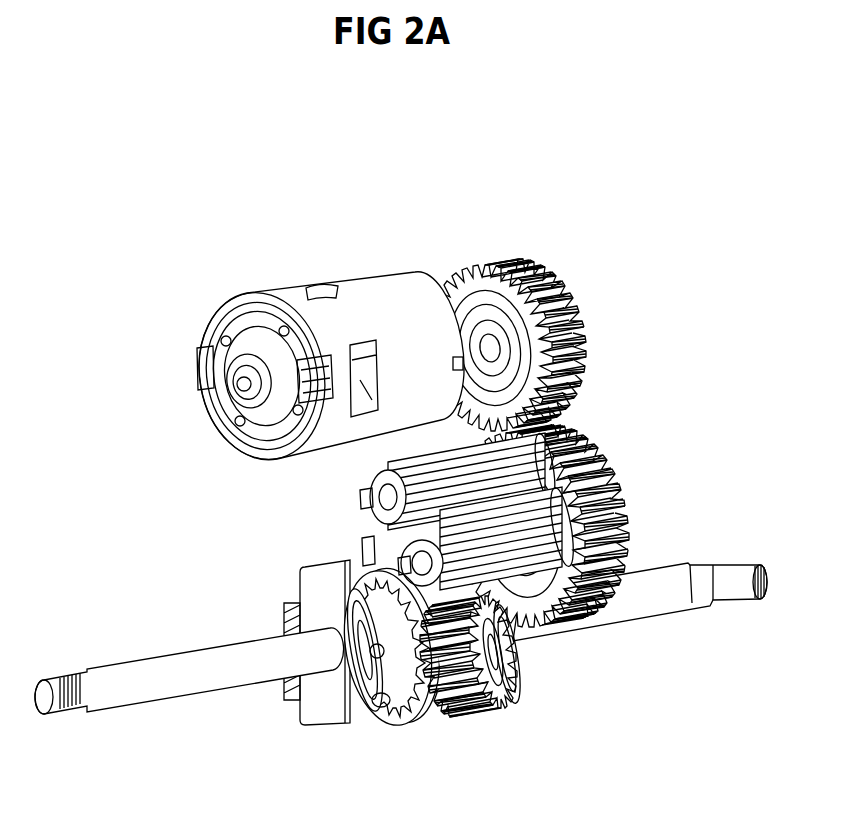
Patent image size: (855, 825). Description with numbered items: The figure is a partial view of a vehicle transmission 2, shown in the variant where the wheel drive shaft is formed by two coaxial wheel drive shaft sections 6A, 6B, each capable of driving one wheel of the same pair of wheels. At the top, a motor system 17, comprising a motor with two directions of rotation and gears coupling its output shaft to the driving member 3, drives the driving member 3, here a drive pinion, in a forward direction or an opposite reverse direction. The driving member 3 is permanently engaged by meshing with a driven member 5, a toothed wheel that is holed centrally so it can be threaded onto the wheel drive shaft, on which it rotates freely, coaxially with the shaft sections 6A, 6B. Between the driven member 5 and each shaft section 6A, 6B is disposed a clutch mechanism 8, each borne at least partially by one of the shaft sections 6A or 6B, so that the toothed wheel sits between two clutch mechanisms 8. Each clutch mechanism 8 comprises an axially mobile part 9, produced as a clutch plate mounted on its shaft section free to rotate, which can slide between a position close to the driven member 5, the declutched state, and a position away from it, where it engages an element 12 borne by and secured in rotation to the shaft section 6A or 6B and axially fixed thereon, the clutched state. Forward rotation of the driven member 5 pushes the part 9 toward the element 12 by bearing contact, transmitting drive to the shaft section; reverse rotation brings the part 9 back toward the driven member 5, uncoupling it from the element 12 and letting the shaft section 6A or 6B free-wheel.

The transmission 2 is at (413, 526).
The driving member 3 is at (610, 530).
The driven member 5 is at (473, 697).
The wheel drive shaft section 6A is at (193, 647).
The wheel drive shaft section 6B is at (687, 612).
The clutch mechanism 8 is at (380, 710).
The axially mobile part 9 is at (397, 703).
The element secured in rotation to the wheel drive shaft 12 is at (363, 705).
The motor system 17 is at (620, 343).